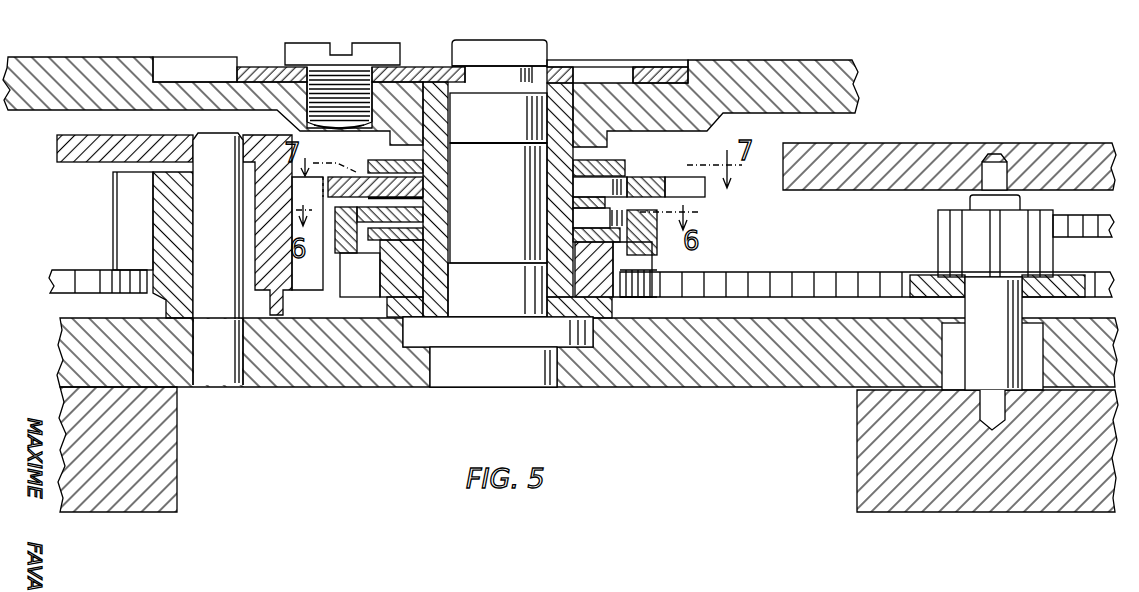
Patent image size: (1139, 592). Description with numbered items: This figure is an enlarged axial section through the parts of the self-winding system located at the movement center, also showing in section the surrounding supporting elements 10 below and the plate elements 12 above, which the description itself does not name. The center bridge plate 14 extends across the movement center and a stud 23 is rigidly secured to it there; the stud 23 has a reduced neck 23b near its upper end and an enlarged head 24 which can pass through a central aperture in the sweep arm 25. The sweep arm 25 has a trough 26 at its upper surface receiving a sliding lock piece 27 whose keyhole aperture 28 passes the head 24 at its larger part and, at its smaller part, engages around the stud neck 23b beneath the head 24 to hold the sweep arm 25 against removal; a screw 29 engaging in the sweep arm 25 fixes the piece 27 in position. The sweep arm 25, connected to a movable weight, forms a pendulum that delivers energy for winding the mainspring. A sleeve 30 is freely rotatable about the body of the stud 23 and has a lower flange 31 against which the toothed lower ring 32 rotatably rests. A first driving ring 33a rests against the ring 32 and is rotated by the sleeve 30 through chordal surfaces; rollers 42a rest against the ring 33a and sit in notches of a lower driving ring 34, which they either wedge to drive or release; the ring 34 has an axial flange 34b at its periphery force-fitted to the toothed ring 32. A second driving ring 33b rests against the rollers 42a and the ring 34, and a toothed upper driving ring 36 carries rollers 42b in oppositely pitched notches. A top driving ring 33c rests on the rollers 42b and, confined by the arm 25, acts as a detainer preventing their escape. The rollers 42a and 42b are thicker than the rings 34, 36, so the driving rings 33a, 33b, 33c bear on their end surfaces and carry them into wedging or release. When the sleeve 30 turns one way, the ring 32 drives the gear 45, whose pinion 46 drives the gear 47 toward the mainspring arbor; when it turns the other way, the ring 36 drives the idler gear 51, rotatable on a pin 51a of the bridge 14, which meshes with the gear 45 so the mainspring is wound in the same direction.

The base support block 10 is at (147, 413).
The plate 12 is at (58, 157).
The bridge plate 14 is at (730, 382).
The stud 23 is at (498, 298).
The reduced neck 23b is at (506, 72).
The enlarged head 24 is at (465, 52).
The sweep arm 25 is at (118, 62).
The trough 26 is at (210, 64).
The sliding lock piece 27 is at (668, 73).
The keyhole aperture 28 is at (613, 76).
The screw 29 is at (303, 50).
The sleeve 30 is at (562, 84).
The lower flange 31 is at (610, 314).
The toothed lower ring 32 is at (645, 282).
The first driving ring 33a is at (572, 233).
The second driving ring 33b is at (632, 180).
The top driving ring 33c is at (608, 167).
The lower driving ring 34 is at (642, 226).
The axial flange 34b is at (645, 242).
The toothed upper driving ring 36 is at (700, 191).
The rollers 42a is at (567, 210).
The rollers 42b is at (567, 178).
The gear 45 is at (85, 281).
The pinion 46 is at (950, 238).
The gear 47 is at (1070, 233).
The idler gear 51 is at (127, 210).
The pin 51a is at (216, 240).